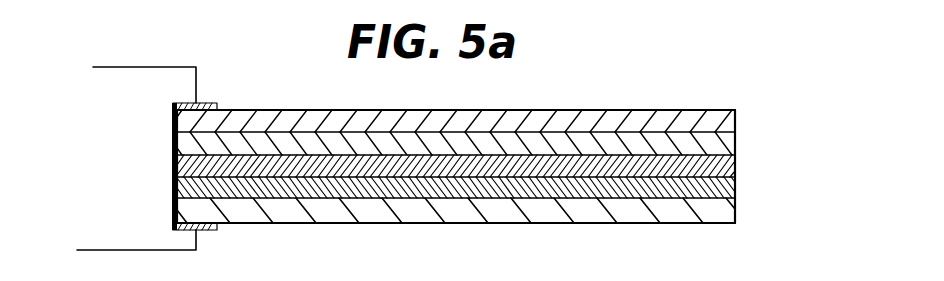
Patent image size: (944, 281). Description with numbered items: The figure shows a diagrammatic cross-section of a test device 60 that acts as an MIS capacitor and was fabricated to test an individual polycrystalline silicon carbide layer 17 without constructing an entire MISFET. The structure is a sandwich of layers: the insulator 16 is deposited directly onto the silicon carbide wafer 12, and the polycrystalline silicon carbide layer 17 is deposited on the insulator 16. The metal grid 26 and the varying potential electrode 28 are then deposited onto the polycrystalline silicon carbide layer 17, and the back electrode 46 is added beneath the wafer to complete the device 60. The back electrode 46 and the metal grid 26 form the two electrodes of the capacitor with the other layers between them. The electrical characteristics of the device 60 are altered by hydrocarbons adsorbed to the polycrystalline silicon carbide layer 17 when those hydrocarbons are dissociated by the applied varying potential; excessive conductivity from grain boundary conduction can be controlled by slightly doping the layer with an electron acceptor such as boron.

The device 60 is at (156, 177).
The varying potential electrode 28 is at (197, 88).
The metal grid 26 is at (638, 111).
The polycrystalline silicon carbide layer 17 is at (723, 148).
The insulator 16 is at (723, 170).
The silicon carbide wafer 12 is at (723, 188).
The back electrode 46 is at (720, 205).